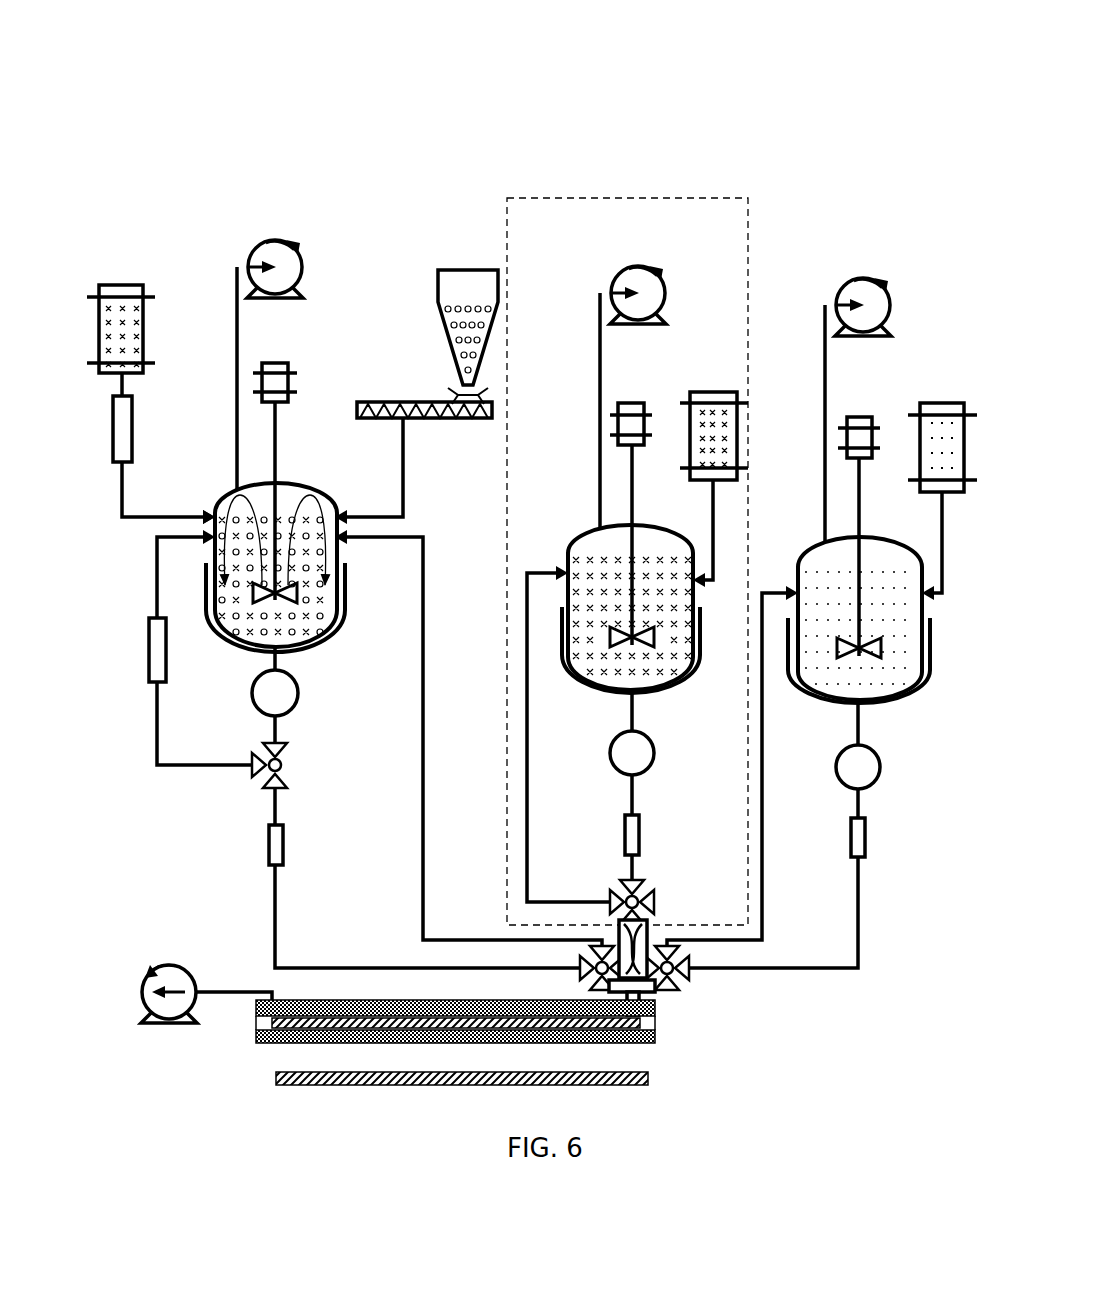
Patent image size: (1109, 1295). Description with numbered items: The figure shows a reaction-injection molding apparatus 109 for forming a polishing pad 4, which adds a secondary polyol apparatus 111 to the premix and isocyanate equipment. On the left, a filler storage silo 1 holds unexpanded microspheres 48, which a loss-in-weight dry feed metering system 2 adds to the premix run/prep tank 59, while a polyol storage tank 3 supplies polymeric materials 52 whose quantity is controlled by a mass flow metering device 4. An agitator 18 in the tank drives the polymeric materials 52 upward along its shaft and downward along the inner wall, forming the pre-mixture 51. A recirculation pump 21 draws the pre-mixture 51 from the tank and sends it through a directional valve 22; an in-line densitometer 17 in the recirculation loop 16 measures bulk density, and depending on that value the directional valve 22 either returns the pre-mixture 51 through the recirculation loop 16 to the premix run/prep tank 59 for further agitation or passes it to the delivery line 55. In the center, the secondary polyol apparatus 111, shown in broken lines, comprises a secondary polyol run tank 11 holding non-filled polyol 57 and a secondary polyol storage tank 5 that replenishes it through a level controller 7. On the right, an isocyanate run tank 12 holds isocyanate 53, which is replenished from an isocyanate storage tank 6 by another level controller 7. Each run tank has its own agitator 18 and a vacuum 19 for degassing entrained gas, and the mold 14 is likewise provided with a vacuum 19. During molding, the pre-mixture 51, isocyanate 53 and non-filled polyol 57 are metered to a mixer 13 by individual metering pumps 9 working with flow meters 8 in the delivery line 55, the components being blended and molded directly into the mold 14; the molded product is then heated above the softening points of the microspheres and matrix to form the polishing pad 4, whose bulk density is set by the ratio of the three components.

The filler storage silo 1 is at (428, 282).
The dry feed metering system 2 is at (398, 402).
The polyol storage tank 3 is at (152, 288).
The mass flow metering device 4 is at (125, 440).
The secondary polyol storage tank 5 is at (685, 395).
The isocyanate storage tank 6 is at (915, 408).
The level controller 7 is at (705, 508).
The flow meter 8 is at (275, 845).
The metering pump 9 is at (642, 748).
The secondary polyol run tank 11 is at (598, 690).
The isocyanate run tank 12 is at (885, 705).
The mixer 13 is at (652, 985).
The mold 14 is at (265, 1048).
The recirculation loop 16 is at (150, 583).
The in-line densitometer 17 is at (150, 655).
The agitator 18 is at (285, 495).
The vacuum 19 is at (285, 262).
The recirculation pump 21 is at (272, 695).
The directional valve 22 is at (262, 768).
The unexpanded microspheres 48 is at (455, 355).
The pre-mixture 51 is at (292, 638).
The polymeric materials 52 is at (122, 347).
The isocyanate 53 is at (945, 460).
The delivery line 55 is at (285, 893).
The non-filled polyol 57 is at (710, 448).
The premix run/prep tank 59 is at (245, 655).
The reaction-injection molding apparatus 109 is at (683, 78).
The secondary polyol apparatus 111 is at (620, 215).